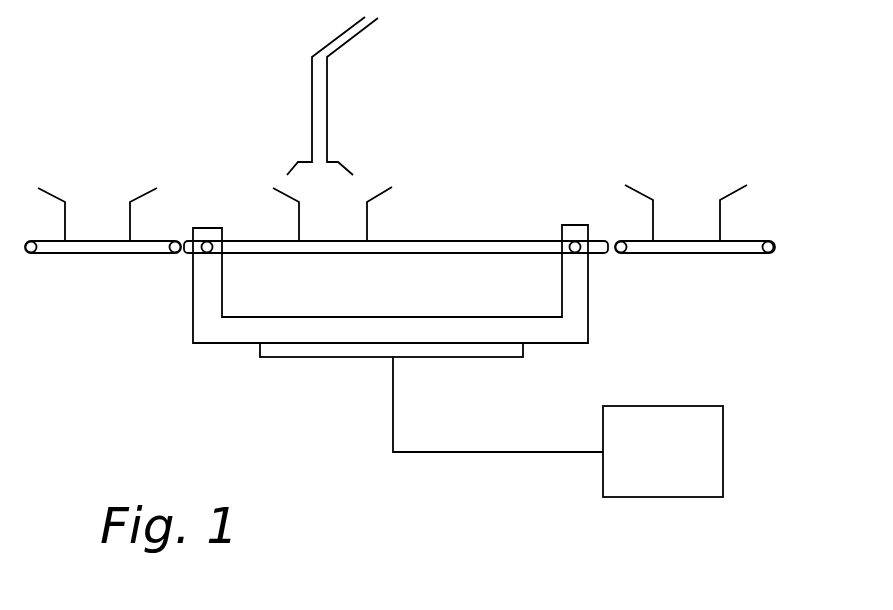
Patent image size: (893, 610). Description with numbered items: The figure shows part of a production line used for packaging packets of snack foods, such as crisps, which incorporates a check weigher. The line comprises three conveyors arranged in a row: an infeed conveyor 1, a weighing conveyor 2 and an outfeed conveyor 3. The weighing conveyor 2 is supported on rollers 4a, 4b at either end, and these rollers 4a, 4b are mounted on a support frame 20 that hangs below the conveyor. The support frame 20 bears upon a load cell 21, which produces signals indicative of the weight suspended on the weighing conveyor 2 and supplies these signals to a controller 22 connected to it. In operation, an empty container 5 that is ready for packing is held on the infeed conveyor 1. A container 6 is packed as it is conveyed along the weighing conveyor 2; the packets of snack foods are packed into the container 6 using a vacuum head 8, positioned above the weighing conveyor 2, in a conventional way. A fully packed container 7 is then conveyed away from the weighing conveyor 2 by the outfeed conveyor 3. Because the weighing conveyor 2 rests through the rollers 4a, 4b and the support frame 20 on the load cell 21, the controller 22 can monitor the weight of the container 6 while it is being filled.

The infeed conveyor 1 is at (103, 253).
The weighing conveyor 2 is at (485, 238).
The outfeed conveyor 3 is at (735, 252).
The roller 4a is at (208, 252).
The roller 4b is at (575, 250).
The empty container 5 is at (89, 203).
The container 6 is at (367, 212).
The fully packed container 7 is at (679, 200).
The vacuum head 8 is at (327, 97).
The support frame 20 is at (222, 347).
The load cell 21 is at (287, 358).
The controller 22 is at (723, 442).